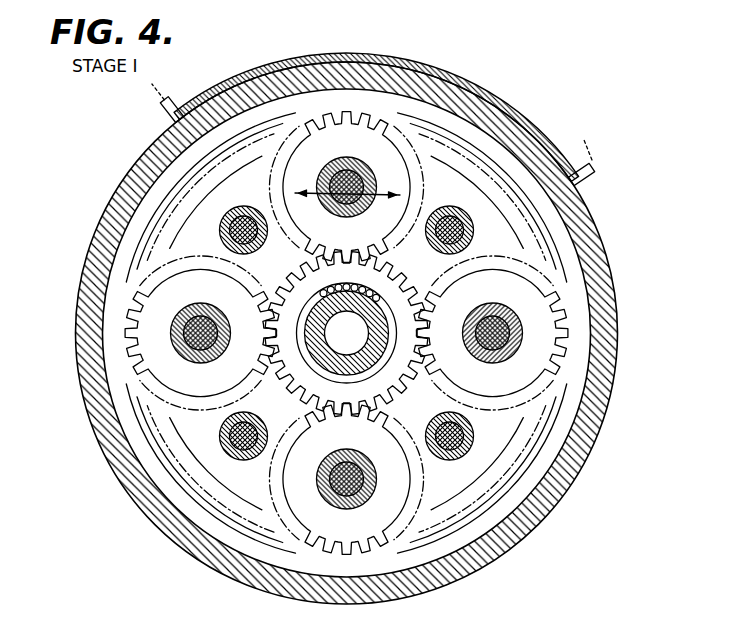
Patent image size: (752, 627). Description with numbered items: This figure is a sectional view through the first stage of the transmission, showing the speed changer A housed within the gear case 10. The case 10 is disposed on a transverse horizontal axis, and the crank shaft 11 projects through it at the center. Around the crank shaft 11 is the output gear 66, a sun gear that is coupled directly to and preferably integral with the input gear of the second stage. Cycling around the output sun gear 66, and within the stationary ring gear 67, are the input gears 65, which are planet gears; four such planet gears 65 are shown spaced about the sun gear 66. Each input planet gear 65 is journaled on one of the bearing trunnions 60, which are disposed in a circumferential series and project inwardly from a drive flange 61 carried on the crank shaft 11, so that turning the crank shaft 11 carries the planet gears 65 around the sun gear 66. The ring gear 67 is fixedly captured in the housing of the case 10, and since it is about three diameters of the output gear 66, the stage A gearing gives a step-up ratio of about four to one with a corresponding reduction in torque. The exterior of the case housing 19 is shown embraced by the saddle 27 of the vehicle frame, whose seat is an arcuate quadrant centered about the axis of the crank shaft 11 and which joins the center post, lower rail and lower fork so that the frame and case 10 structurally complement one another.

The gear case 10 is at (610, 248).
The crank shaft 11 is at (313, 344).
The case housing 19 is at (610, 328).
The saddle 27 is at (594, 176).
The bearing trunnions 60 is at (196, 343).
The drive flange 61 is at (178, 233).
The input gear 65 is at (130, 337).
The output gear 66 is at (305, 260).
The ring gear 67 is at (148, 388).
The speed changer A is at (387, 100).